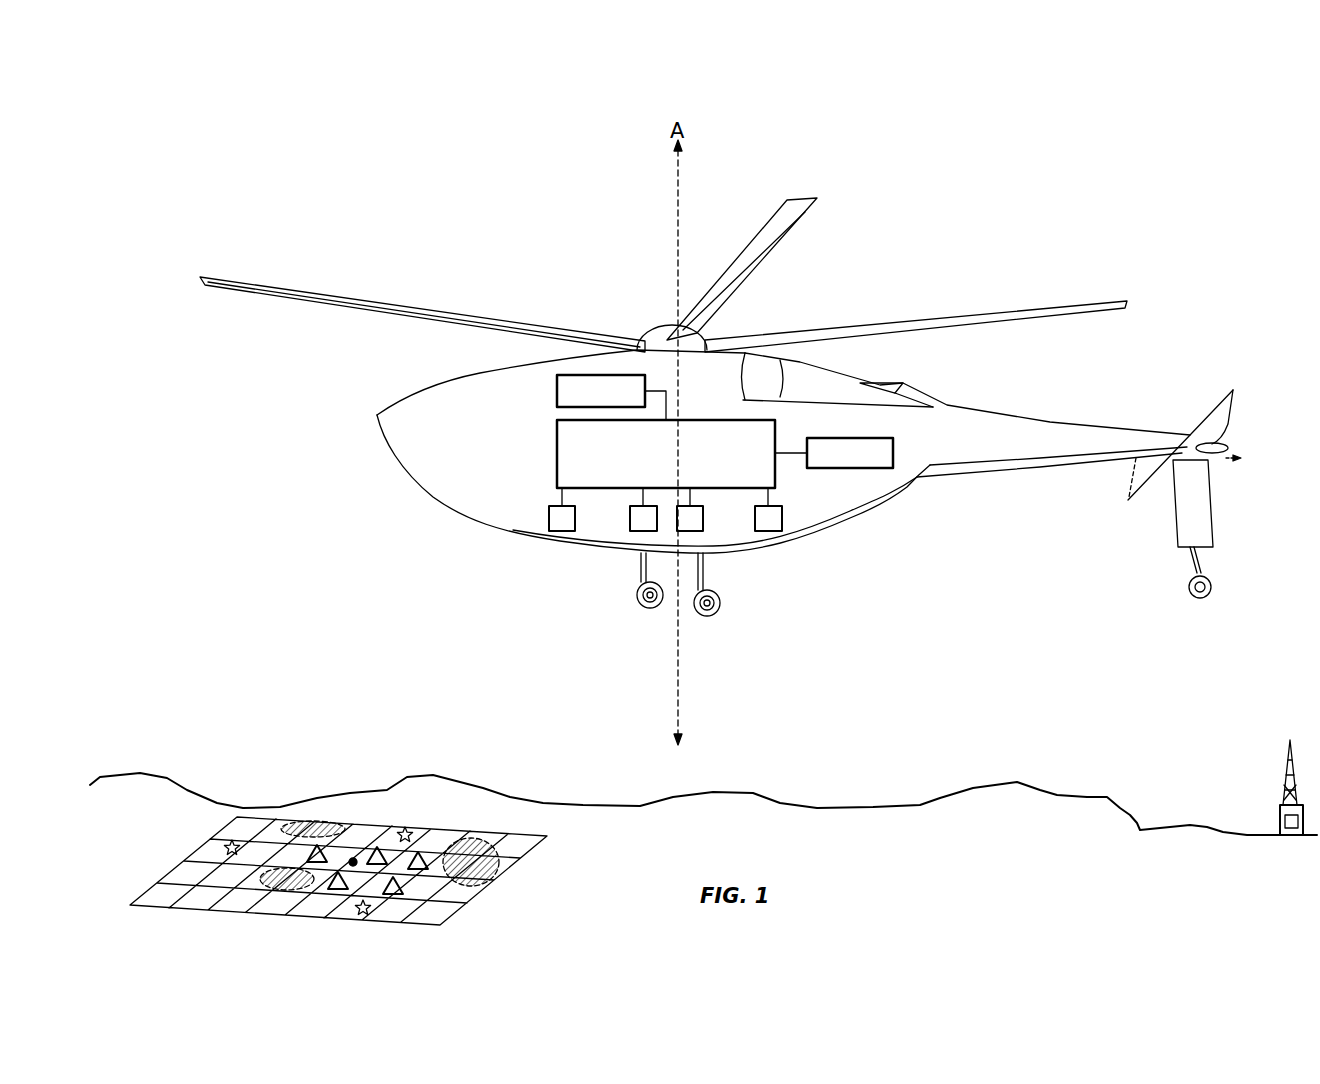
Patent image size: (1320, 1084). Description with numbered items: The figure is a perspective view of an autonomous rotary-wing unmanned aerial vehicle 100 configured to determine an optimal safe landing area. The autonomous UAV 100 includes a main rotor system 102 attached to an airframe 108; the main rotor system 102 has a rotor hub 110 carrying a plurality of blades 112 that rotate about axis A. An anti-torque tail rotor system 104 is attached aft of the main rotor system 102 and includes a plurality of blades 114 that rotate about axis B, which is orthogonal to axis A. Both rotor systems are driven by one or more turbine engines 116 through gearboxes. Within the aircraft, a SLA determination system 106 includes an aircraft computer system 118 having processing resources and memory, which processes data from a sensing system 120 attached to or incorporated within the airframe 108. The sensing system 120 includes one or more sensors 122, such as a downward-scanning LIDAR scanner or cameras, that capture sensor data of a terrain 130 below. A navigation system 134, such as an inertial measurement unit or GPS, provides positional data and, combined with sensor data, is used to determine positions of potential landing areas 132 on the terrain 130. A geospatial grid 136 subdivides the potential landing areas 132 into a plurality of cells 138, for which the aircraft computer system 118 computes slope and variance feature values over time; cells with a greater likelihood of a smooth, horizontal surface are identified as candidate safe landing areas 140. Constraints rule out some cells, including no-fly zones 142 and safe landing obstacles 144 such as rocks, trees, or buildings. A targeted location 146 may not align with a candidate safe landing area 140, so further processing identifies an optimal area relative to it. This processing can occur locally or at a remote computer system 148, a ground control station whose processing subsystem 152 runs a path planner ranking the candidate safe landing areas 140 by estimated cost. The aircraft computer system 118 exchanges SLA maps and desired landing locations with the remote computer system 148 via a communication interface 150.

The autonomous rotary-wing unmanned aerial vehicle 100 is at (414, 66).
The main rotor system 102 is at (591, 265).
The tail rotor system 104 is at (1196, 356).
The SLA determination system 106 is at (543, 435).
The airframe 108 is at (951, 459).
The rotor hub 110 is at (648, 339).
The blades 112 is at (963, 312).
The blades 114 is at (1128, 500).
The turbine engines 116 is at (762, 385).
The aircraft computer system 118 is at (666, 454).
The sensing system 120 is at (527, 492).
The sensors 122 is at (518, 528).
The terrain 130 is at (703, 806).
The potential landing areas 132 is at (534, 813).
The navigation system 134 is at (611, 397).
The geospatial grid 136 is at (505, 868).
The cells 138 is at (466, 806).
The candidate safe landing areas 140 is at (227, 847).
The no-fly zones 142 is at (293, 824).
The safe landing obstacles 144 is at (317, 850).
The targeted location 146 is at (356, 858).
The remote computer system 148 is at (1278, 815).
The communication interface 150 is at (834, 453).
The processing subsystem 152 is at (1285, 838).